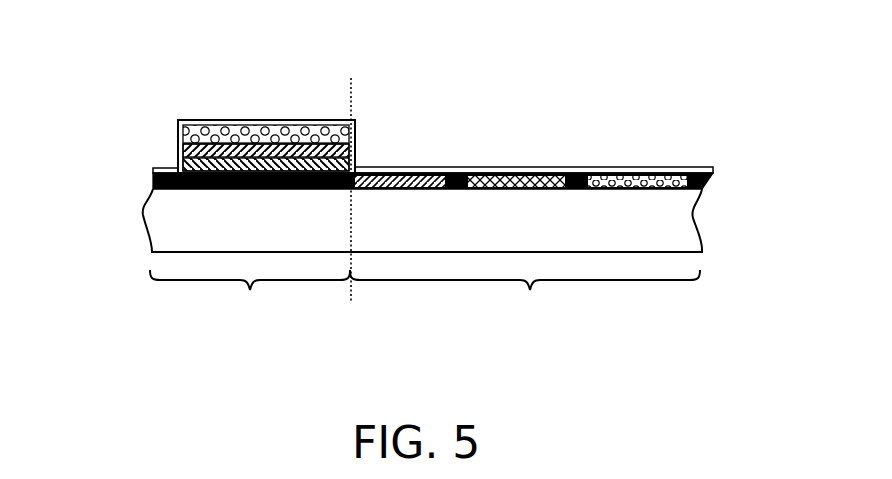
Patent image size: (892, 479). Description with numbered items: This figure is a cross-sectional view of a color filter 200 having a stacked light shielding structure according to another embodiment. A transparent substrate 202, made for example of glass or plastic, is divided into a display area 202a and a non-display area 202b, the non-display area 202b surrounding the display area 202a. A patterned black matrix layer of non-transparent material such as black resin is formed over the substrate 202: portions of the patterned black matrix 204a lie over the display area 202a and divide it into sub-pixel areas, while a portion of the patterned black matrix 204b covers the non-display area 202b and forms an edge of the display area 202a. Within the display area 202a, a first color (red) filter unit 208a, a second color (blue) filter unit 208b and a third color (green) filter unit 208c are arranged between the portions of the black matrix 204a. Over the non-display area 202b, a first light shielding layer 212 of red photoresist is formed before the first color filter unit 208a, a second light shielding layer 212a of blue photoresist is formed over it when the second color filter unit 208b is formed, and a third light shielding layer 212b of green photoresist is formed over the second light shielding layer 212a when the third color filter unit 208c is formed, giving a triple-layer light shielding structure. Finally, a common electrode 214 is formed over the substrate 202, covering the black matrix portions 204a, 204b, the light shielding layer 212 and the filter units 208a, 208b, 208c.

The organic light emitting device 200 is at (724, 361).
The substrate 202 is at (670, 217).
The display area 202a is at (525, 299).
The non-display area 202b is at (250, 203).
The portions of patterned black matrix 204a is at (697, 167).
The portion of patterned black matrix 204b is at (153, 176).
The first color filter unit 208a is at (545, 170).
The second color filter unit 208b is at (430, 172).
The third color filter unit 208c is at (652, 170).
The first light shielding layer 212 is at (178, 158).
The second light shielding layer 212a is at (178, 150).
The third light shielding layer 212b is at (178, 135).
The common electrode 214 is at (221, 121).